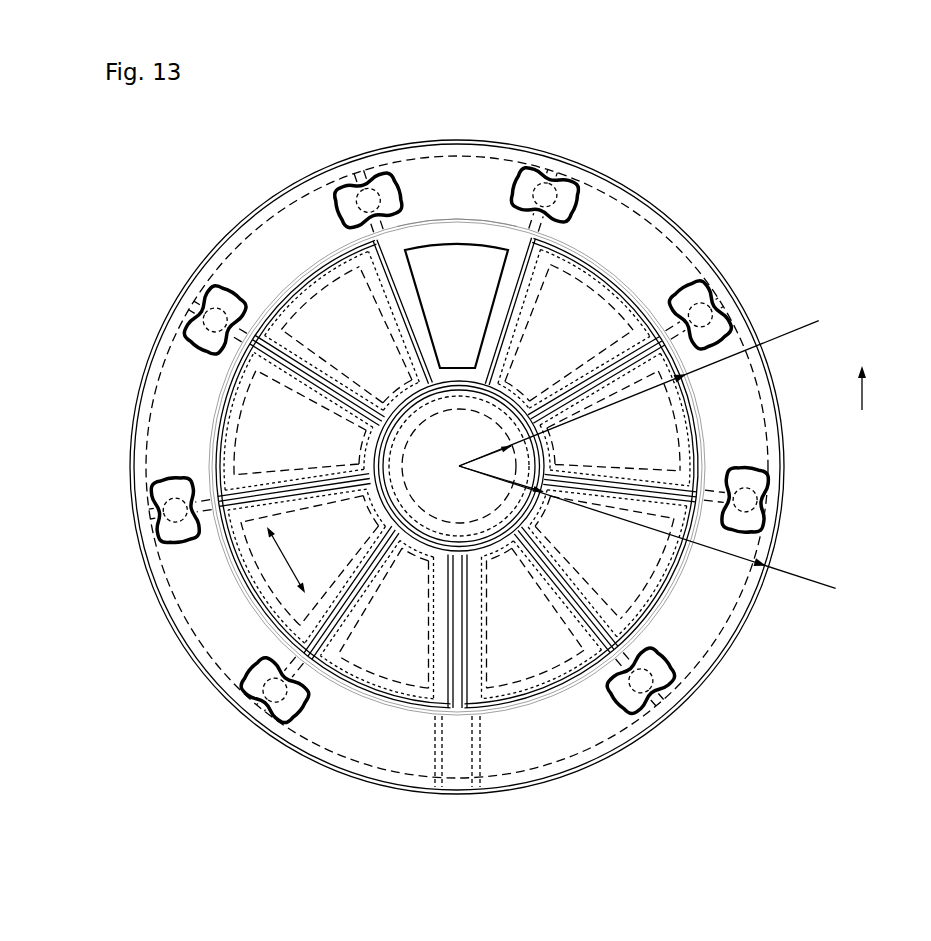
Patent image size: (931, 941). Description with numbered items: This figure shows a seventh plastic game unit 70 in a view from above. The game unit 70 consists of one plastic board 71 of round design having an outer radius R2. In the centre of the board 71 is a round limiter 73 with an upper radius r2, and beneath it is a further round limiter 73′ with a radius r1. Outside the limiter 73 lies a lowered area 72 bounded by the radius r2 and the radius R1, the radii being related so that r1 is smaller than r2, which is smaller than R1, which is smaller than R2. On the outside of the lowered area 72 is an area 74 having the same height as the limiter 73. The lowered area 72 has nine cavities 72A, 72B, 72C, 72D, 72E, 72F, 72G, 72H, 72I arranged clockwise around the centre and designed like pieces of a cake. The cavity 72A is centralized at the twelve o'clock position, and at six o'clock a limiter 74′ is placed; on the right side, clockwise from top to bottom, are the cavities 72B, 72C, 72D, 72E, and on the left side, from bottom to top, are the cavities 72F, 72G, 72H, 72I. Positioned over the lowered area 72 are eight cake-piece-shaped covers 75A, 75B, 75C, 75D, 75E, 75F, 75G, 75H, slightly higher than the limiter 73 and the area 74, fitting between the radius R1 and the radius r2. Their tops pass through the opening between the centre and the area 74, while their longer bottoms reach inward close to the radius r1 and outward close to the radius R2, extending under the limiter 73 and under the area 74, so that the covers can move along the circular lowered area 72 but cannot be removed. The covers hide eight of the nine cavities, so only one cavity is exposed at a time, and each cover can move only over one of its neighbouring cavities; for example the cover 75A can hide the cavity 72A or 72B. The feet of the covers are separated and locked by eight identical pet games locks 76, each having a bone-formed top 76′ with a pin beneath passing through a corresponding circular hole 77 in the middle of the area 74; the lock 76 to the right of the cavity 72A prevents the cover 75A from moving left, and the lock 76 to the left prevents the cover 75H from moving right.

The seventh plastic game unit 70 is at (357, 132).
The plastic board 71 is at (620, 198).
The lowered area 72 is at (477, 232).
The cavity 72A is at (422, 248).
The cavity 72B is at (576, 268).
The cavity 72C is at (684, 402).
The cavity 72D is at (663, 557).
The cavity 72E is at (562, 680).
The cavity 72F is at (385, 673).
The cavity 72G is at (270, 580).
The cavity 72H is at (230, 458).
The cavity 72I is at (320, 293).
The round limiter 73 is at (437, 498).
The round limiter 73′ is at (505, 525).
The area 74 is at (453, 173).
The limiter 74′ is at (455, 760).
The cover 75A is at (603, 298).
The cover 75B is at (684, 445).
The cover 75C is at (653, 590).
The cover 75D is at (493, 693).
The cover 75E is at (347, 667).
The cover 75F is at (237, 537).
The cover 75G is at (240, 383).
The cover 75H is at (313, 263).
The pet games lock 76 is at (357, 190).
The top 76′ is at (552, 186).
The circular hole 77 is at (537, 185).
The radius R1 is at (639, 384).
The outer radius R2 is at (647, 527).
The radius r1 is at (485, 447).
The upper radius r2 is at (501, 471).